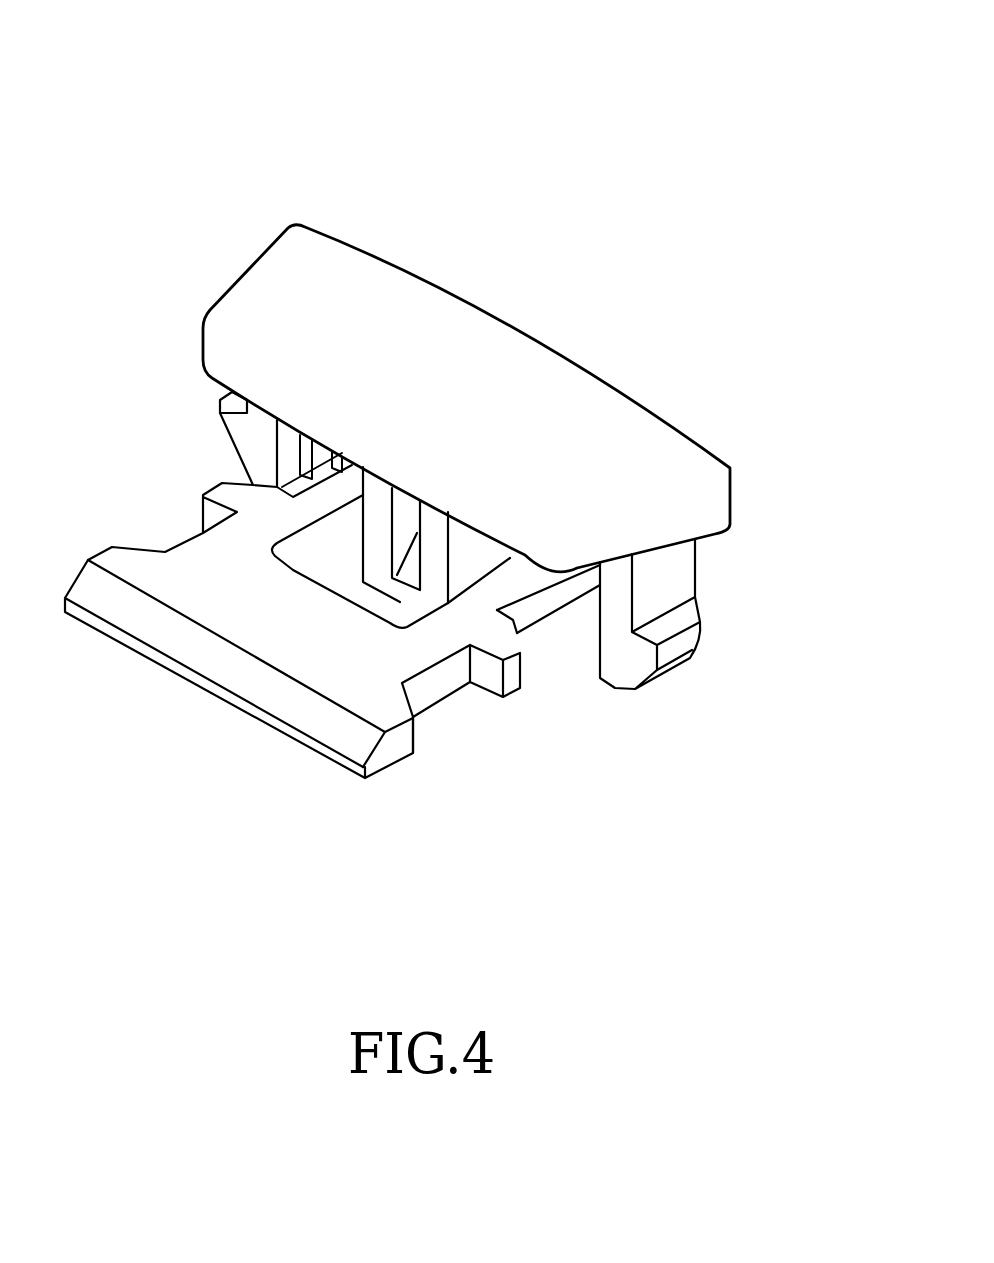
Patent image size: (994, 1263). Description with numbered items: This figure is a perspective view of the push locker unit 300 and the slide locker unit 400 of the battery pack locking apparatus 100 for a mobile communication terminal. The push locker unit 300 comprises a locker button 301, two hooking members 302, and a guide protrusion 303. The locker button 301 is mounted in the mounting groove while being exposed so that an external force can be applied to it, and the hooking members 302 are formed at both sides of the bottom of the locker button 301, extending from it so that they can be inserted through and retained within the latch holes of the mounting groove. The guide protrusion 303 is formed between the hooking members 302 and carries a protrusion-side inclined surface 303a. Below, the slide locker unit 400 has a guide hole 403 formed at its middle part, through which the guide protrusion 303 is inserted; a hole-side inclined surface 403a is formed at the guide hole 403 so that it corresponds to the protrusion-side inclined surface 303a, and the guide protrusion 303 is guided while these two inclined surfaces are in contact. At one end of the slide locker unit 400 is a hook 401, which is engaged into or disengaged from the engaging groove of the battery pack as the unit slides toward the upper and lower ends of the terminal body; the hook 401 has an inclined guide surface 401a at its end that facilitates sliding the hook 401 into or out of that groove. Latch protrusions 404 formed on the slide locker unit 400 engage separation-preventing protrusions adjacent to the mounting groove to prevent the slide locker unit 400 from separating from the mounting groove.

The battery pack locking apparatus 100 is at (476, 88).
The push locker unit 300 is at (860, 310).
The locker button 301 is at (572, 398).
The hooking member 302 is at (218, 417).
The guide protrusion 303 is at (438, 538).
The protrusion-side inclined surface 303a is at (493, 575).
The slide locker unit 400 is at (122, 518).
The hook 401 is at (183, 672).
The guide surface 401a is at (283, 695).
The guide hole 403 is at (365, 598).
The hole-side inclined surface 403a is at (533, 578).
The latch protrusion 404 is at (513, 623).